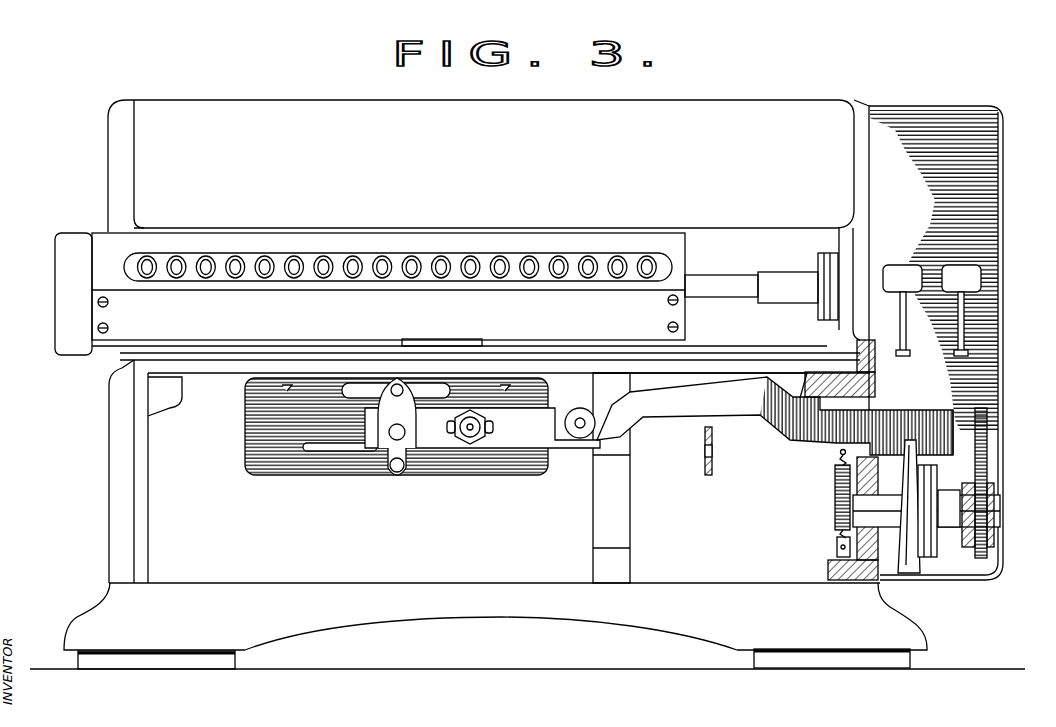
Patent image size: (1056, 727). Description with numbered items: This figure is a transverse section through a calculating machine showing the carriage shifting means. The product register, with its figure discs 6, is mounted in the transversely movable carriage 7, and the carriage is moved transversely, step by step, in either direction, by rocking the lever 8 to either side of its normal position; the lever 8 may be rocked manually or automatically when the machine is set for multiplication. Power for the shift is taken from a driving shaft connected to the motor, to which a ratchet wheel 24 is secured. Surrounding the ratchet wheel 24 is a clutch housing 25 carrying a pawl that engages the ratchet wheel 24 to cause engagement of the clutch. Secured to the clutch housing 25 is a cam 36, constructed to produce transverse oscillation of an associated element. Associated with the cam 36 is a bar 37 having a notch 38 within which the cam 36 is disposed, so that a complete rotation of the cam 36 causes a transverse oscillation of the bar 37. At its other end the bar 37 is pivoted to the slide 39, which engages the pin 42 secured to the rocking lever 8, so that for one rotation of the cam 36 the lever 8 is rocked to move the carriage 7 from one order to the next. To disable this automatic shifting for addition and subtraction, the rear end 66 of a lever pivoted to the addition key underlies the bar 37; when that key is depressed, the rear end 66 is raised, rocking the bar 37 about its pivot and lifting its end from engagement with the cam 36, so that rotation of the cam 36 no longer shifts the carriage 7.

The figure discs 6 is at (397, 237).
The carriage 7 is at (630, 320).
The lever 8 is at (378, 397).
The slide 39 is at (552, 430).
The pin 42 is at (395, 441).
The rear end 66 is at (713, 434).
The bar 37 is at (798, 442).
The notch 38 is at (910, 457).
The ratchet wheel 24 is at (1000, 508).
The clutch housing 25 is at (937, 547).
The cam 36 is at (908, 575).